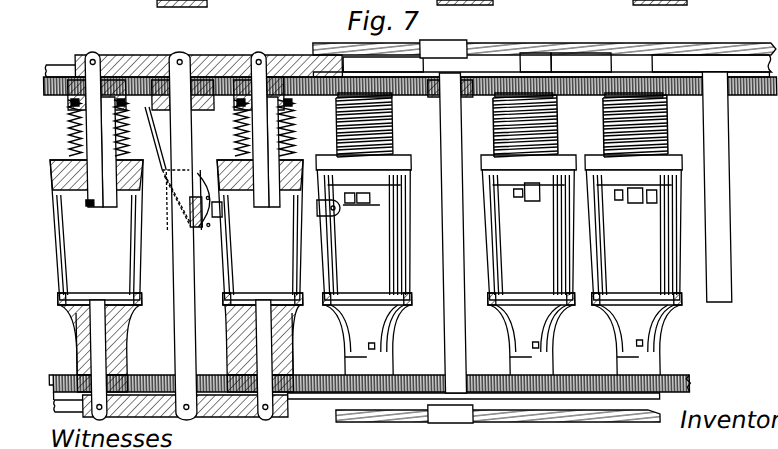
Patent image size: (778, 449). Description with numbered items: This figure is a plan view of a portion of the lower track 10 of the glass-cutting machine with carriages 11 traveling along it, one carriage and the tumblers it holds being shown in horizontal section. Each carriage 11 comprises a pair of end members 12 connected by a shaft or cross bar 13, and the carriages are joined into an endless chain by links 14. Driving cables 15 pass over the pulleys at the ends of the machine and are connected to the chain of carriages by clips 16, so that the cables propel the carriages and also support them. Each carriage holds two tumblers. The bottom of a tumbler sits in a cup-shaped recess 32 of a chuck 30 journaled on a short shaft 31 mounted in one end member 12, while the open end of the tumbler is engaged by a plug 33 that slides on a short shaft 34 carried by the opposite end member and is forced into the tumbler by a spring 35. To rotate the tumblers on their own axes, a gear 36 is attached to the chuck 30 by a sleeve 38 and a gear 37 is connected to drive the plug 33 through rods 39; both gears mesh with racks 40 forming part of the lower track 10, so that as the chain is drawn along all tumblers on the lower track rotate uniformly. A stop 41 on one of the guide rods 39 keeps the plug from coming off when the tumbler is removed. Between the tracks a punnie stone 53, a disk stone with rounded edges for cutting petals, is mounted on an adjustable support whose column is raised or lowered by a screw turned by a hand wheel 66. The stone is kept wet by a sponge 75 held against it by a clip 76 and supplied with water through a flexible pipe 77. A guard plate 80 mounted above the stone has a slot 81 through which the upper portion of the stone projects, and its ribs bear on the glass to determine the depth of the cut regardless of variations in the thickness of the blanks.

The lower track 10 is at (205, 94).
The carriage 11 is at (483, 249).
The end member 12 is at (218, 57).
The shaft or cross bar 13 is at (189, 272).
The link 14 is at (297, 74).
The driving cable 15 is at (566, 45).
The clip 16 is at (457, 45).
The chuck 30 is at (72, 332).
The short shaft 31 is at (71, 353).
The cup-shaped recess 32 is at (147, 292).
The plug 33 is at (366, 212).
The short shaft 34 is at (101, 57).
The spring 35 is at (132, 144).
The gear 36 is at (116, 382).
The gear 37 is at (124, 87).
The sleeve 38 is at (122, 333).
The rod 39 is at (76, 130).
The rack 40 is at (681, 374).
The stop 41 is at (76, 205).
The punnie stone 53 is at (195, 228).
The hand wheel 66 is at (210, 4).
The sponge 75 is at (177, 222).
The clip 76 is at (182, 228).
The flexible pipe 77 is at (166, 172).
The plate 80 is at (200, 171).
The slot 81 is at (309, 217).